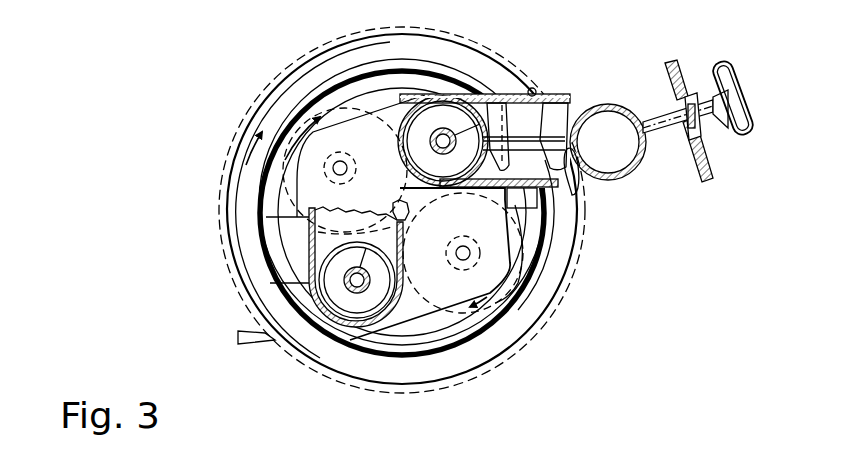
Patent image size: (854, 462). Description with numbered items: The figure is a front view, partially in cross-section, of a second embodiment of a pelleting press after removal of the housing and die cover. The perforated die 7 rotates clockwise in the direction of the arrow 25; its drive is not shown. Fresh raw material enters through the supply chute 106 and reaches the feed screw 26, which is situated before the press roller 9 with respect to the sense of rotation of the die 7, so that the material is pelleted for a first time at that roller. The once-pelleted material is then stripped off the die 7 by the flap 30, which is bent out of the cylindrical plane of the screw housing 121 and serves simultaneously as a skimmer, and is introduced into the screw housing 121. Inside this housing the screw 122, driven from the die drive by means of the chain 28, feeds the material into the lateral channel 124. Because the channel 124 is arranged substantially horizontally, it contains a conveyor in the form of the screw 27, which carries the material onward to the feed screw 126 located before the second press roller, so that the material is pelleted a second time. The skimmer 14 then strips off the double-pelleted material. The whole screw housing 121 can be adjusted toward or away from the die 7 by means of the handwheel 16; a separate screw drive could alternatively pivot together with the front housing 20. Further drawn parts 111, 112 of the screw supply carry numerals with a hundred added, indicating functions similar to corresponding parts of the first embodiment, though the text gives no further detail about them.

The perforated die 7 is at (230, 226).
The press roller 9 is at (333, 113).
The skimmer 14 is at (248, 350).
The handwheel 16 is at (720, 62).
The front housing 20 is at (706, 175).
The arrow 25 is at (232, 158).
The feed screw 26 is at (342, 320).
The screw 27 is at (523, 212).
The chain 28 is at (555, 85).
The flap 30 is at (574, 190).
The supply chute 106 is at (310, 238).
The guide channel 111 is at (300, 266).
The swing plate 112 is at (553, 230).
The screw housing 121 is at (647, 166).
The screw 122 is at (585, 122).
The lateral channel 124 is at (530, 93).
The feed screw 126 is at (448, 118).